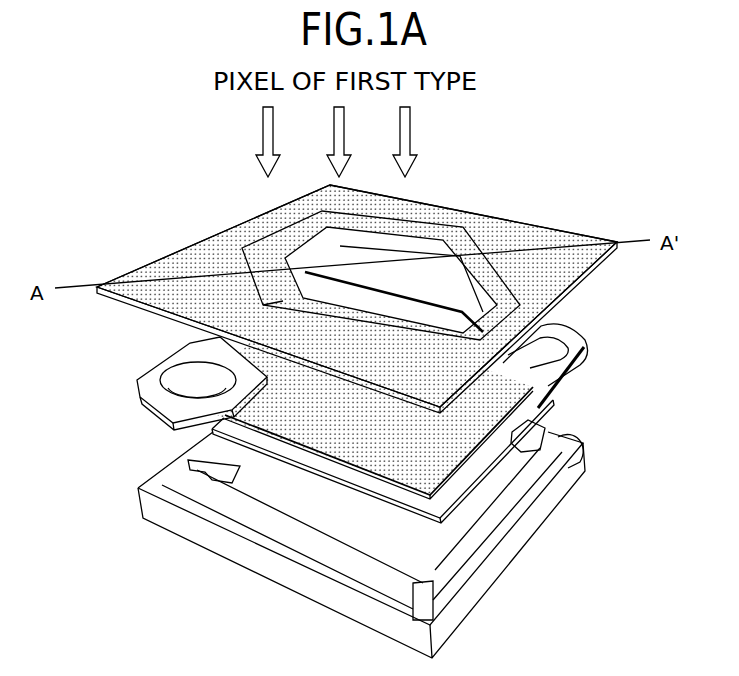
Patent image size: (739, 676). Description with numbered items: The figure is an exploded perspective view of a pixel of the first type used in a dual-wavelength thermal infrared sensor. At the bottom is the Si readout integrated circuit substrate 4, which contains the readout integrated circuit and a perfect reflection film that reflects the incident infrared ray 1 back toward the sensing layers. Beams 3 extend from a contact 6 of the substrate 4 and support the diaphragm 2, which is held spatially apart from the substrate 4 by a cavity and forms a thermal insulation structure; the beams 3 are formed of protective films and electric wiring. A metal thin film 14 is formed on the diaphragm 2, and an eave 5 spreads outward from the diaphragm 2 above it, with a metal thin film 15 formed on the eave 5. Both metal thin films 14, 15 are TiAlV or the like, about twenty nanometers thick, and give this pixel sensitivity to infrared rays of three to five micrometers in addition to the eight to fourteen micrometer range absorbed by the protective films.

The incident infrared ray 1 is at (351, 142).
The metal thin film 15 is at (492, 225).
The eave 5 is at (588, 278).
The contact 6 is at (545, 349).
The metal thin film 14 is at (490, 397).
The diaphragm 2 is at (418, 398).
The beams 3 is at (493, 468).
The Si readout integrated circuit substrate 4 is at (440, 560).